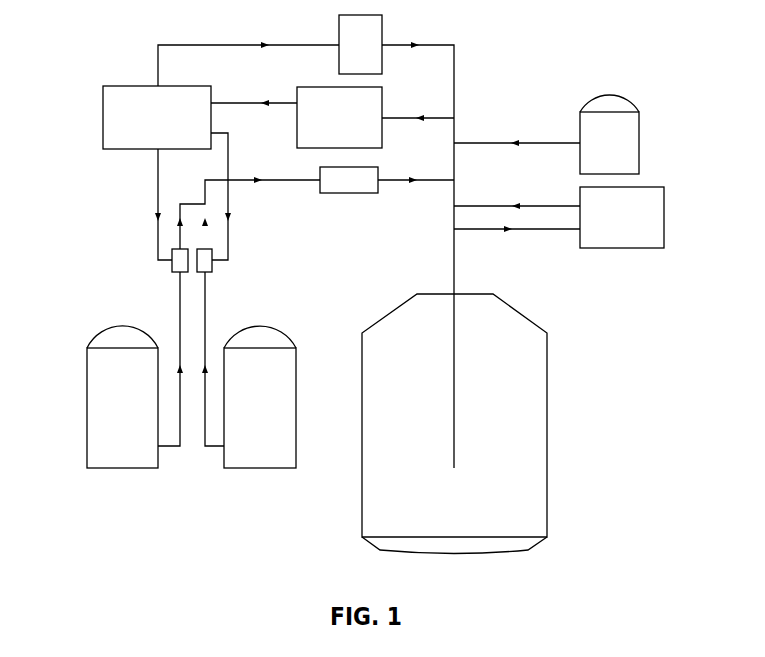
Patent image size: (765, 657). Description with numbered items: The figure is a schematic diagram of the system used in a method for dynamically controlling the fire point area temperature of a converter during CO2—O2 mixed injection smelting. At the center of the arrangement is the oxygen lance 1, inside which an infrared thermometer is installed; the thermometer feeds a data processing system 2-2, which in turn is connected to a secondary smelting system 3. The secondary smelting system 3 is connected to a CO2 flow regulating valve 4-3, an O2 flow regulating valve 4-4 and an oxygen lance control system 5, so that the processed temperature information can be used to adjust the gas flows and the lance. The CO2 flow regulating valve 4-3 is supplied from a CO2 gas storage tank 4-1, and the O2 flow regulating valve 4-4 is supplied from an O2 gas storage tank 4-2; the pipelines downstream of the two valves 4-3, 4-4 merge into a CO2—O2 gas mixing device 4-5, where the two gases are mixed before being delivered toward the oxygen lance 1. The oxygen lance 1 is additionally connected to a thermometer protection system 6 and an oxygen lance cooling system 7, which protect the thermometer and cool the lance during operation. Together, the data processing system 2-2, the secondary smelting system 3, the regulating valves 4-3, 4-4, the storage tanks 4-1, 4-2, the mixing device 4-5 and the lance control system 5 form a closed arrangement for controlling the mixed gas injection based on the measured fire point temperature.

The oxygen lance 1 is at (455, 414).
The data processing system 2-2 is at (355, 107).
The secondary smelting system 3 is at (182, 107).
The CO2 gas storage tank 4-1 is at (127, 421).
The O2 gas storage tank 4-2 is at (253, 420).
The CO2 flow regulating valve 4-3 is at (177, 262).
The O2 flow regulating valve 4-4 is at (207, 258).
The CO2—O2 gas mixing device 4-5 is at (355, 183).
The oxygen lance control system 5 is at (356, 44).
The thermometer protection system 6 is at (607, 144).
The oxygen lance cooling system 7 is at (607, 203).